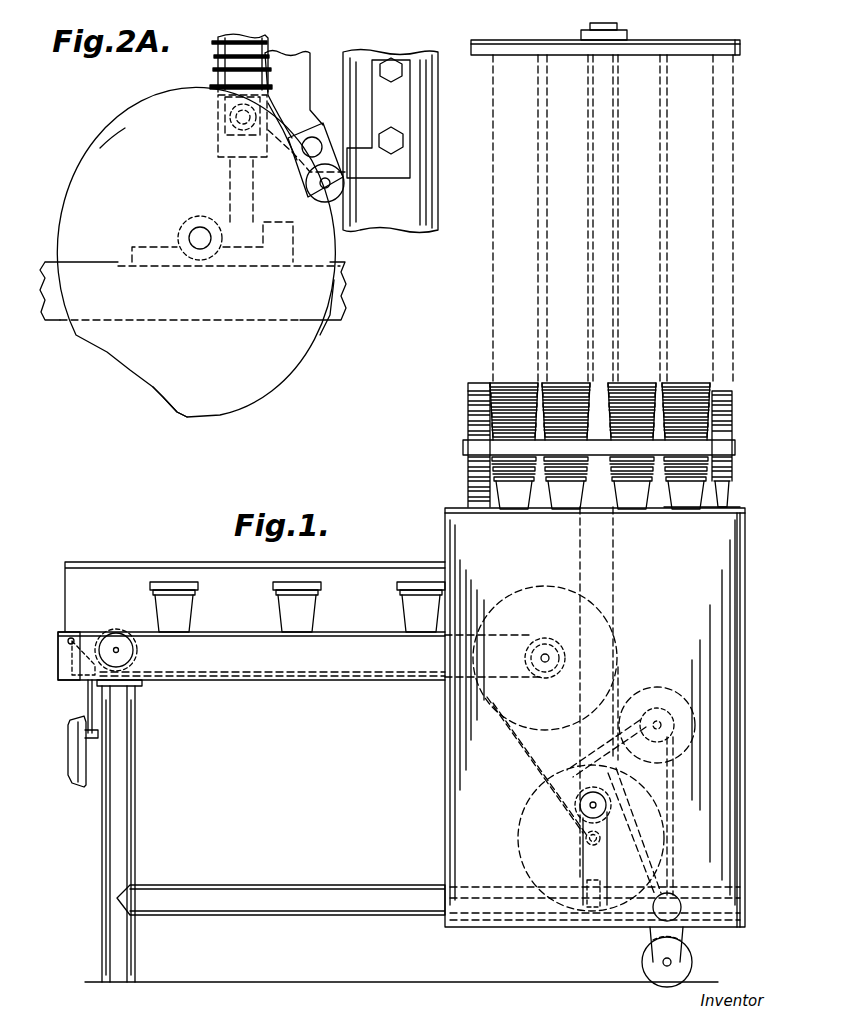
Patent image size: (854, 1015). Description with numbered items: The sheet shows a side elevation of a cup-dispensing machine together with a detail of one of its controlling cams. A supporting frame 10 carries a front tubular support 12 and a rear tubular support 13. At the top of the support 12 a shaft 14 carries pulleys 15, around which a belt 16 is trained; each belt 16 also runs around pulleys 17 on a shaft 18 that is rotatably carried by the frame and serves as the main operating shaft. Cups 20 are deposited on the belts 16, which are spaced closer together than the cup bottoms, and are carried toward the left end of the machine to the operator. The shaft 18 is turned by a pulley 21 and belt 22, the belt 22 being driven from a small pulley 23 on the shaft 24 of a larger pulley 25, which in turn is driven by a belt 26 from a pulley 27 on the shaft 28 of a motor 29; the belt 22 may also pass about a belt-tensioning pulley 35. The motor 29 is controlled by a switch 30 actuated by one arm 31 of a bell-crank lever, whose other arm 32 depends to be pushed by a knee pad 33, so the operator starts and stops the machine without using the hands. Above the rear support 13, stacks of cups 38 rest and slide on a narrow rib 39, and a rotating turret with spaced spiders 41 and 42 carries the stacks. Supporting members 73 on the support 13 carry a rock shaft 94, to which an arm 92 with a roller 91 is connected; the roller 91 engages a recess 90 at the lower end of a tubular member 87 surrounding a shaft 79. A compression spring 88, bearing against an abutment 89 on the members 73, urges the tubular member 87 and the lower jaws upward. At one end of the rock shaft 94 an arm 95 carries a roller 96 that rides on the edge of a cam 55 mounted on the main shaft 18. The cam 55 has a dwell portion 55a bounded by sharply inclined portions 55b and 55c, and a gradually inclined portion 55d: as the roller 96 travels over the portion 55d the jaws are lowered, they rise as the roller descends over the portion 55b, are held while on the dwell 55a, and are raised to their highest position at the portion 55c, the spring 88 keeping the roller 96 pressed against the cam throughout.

In FIG. 1, the supporting frame 10 is at (268, 885).
In FIG. 1, the tubular support 12 is at (122, 819).
In FIG. 2A, the second tubular support 13 is at (420, 218).
In FIG. 1, the second tubular support 13 is at (608, 566).
In FIG. 1, the shaft 14 is at (116, 648).
In FIG. 1, the pulleys 15 is at (100, 634).
In FIG. 1, the belt 16 is at (235, 632).
In FIG. 1, the pulleys 17 is at (545, 658).
In FIG. 2A, the shaft 18 is at (199, 232).
In FIG. 1, the shaft 18 is at (545, 680).
In FIG. 1, the cups 20 is at (468, 402).
In FIG. 1, the pulley 21 is at (444, 704).
In FIG. 1, the belt 22 is at (450, 745).
In FIG. 1, the small pulley 23 is at (585, 839).
In FIG. 1, the shaft 24 is at (582, 848).
In FIG. 1, the larger pulley 25 is at (665, 843).
In FIG. 1, the belt 26 is at (696, 790).
In FIG. 1, the pulley 27 is at (676, 726).
In FIG. 1, the shaft 28 is at (695, 713).
In FIG. 1, the motor 29 is at (683, 697).
In FIG. 1, the switch 30 is at (76, 686).
In FIG. 1, the arm 31 is at (60, 658).
In FIG. 1, the arm 32 is at (84, 718).
In FIG. 1, the knee pad 33 is at (70, 767).
In FIG. 1, the belt-tensioning pulley 35 is at (575, 805).
In FIG. 1, the stacks of cups 38 is at (472, 390).
In FIG. 1, the rib 39 is at (695, 507).
In FIG. 1, the spider 41 is at (738, 448).
In FIG. 1, the spider 42 is at (742, 47).
In FIG. 2A, the cam 55 is at (224, 376).
In FIG. 2A, the dwell portion 55a is at (87, 150).
In FIG. 2A, the sharply inclined portion 55b is at (158, 396).
In FIG. 2A, the sharply inclined portion 55c is at (283, 128).
In FIG. 2A, the gradually inclined portion 55d is at (320, 348).
In FIG. 2A, the supporting members 73 is at (420, 183).
In FIG. 2A, the shaft 79 is at (236, 188).
In FIG. 2A, the tubular member 87 is at (259, 46).
In FIG. 2A, the compression spring 88 is at (214, 50).
In FIG. 2A, the abutment 89 is at (212, 88).
In FIG. 2A, the recess 90 is at (222, 102).
In FIG. 2A, the roller 91 is at (228, 119).
In FIG. 2A, the arm 92 is at (298, 116).
In FIG. 2A, the rock shaft 94 is at (316, 146).
In FIG. 2A, the arm 95 is at (350, 170).
In FIG. 2A, the roller 96 is at (344, 193).